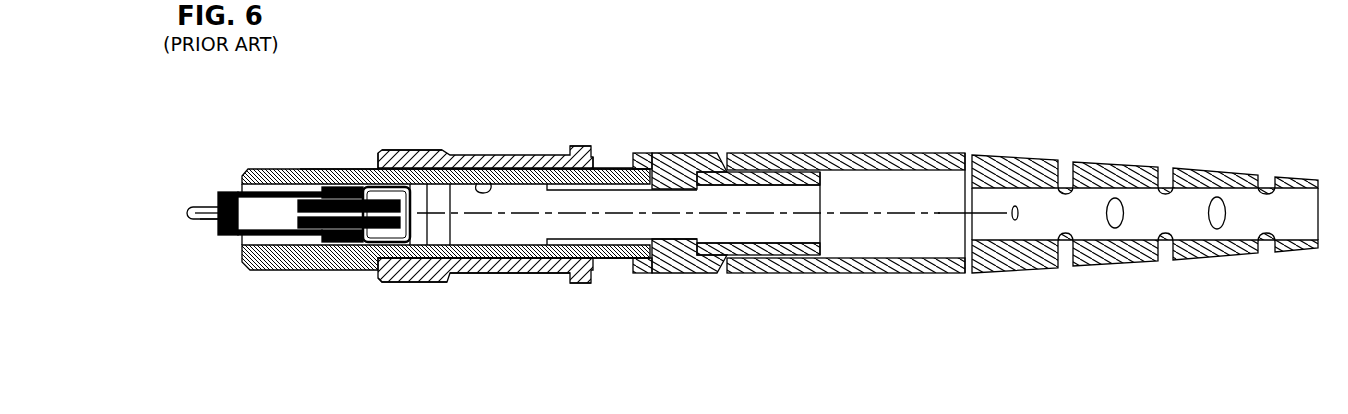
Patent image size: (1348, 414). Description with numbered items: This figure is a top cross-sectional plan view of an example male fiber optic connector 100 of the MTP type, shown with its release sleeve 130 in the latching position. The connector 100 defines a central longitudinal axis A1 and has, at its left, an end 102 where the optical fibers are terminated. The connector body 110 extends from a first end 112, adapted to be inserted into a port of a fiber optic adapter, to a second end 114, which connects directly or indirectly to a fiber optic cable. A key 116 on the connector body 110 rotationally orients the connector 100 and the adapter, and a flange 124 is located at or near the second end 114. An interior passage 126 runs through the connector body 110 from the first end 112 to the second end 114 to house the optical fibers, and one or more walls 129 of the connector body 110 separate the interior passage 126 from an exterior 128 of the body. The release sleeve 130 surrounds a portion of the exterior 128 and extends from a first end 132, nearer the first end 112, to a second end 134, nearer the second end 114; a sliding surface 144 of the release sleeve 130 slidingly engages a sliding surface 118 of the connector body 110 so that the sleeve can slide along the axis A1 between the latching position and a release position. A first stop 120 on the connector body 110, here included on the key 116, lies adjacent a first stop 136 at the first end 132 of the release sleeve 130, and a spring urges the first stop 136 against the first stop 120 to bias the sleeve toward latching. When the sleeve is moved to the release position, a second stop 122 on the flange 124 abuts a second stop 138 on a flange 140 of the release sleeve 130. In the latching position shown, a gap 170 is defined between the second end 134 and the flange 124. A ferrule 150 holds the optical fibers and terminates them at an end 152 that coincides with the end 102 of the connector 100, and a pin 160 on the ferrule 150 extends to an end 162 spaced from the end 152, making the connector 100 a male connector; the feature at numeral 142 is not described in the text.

The connector 100 is at (912, 128).
The end 102 is at (205, 218).
The connector body 110 is at (256, 174).
The first end 112 is at (240, 187).
The second end 114 is at (655, 167).
The key 116 is at (266, 271).
The sliding surface 118 is at (608, 262).
The first stop 120 is at (376, 262).
The second stop 122 is at (623, 270).
The flange 124 is at (640, 274).
The interior passage 126 is at (648, 206).
The exterior 128 is at (434, 260).
The wall 129 is at (335, 170).
The release sleeve 130 is at (429, 149).
The first end 132 is at (379, 148).
The second end 134 is at (594, 157).
The first stop 136 is at (378, 281).
The second stop 138 is at (591, 272).
The flange 140 is at (581, 145).
The nut front face 142 is at (377, 167).
The sliding surface 144 is at (477, 183).
The ferrule 150 is at (228, 235).
The end 152 is at (214, 220).
The pin 160 is at (207, 207).
The end 162 is at (189, 208).
The gap 170 is at (613, 160).
The central longitudinal axis A1 is at (850, 213).